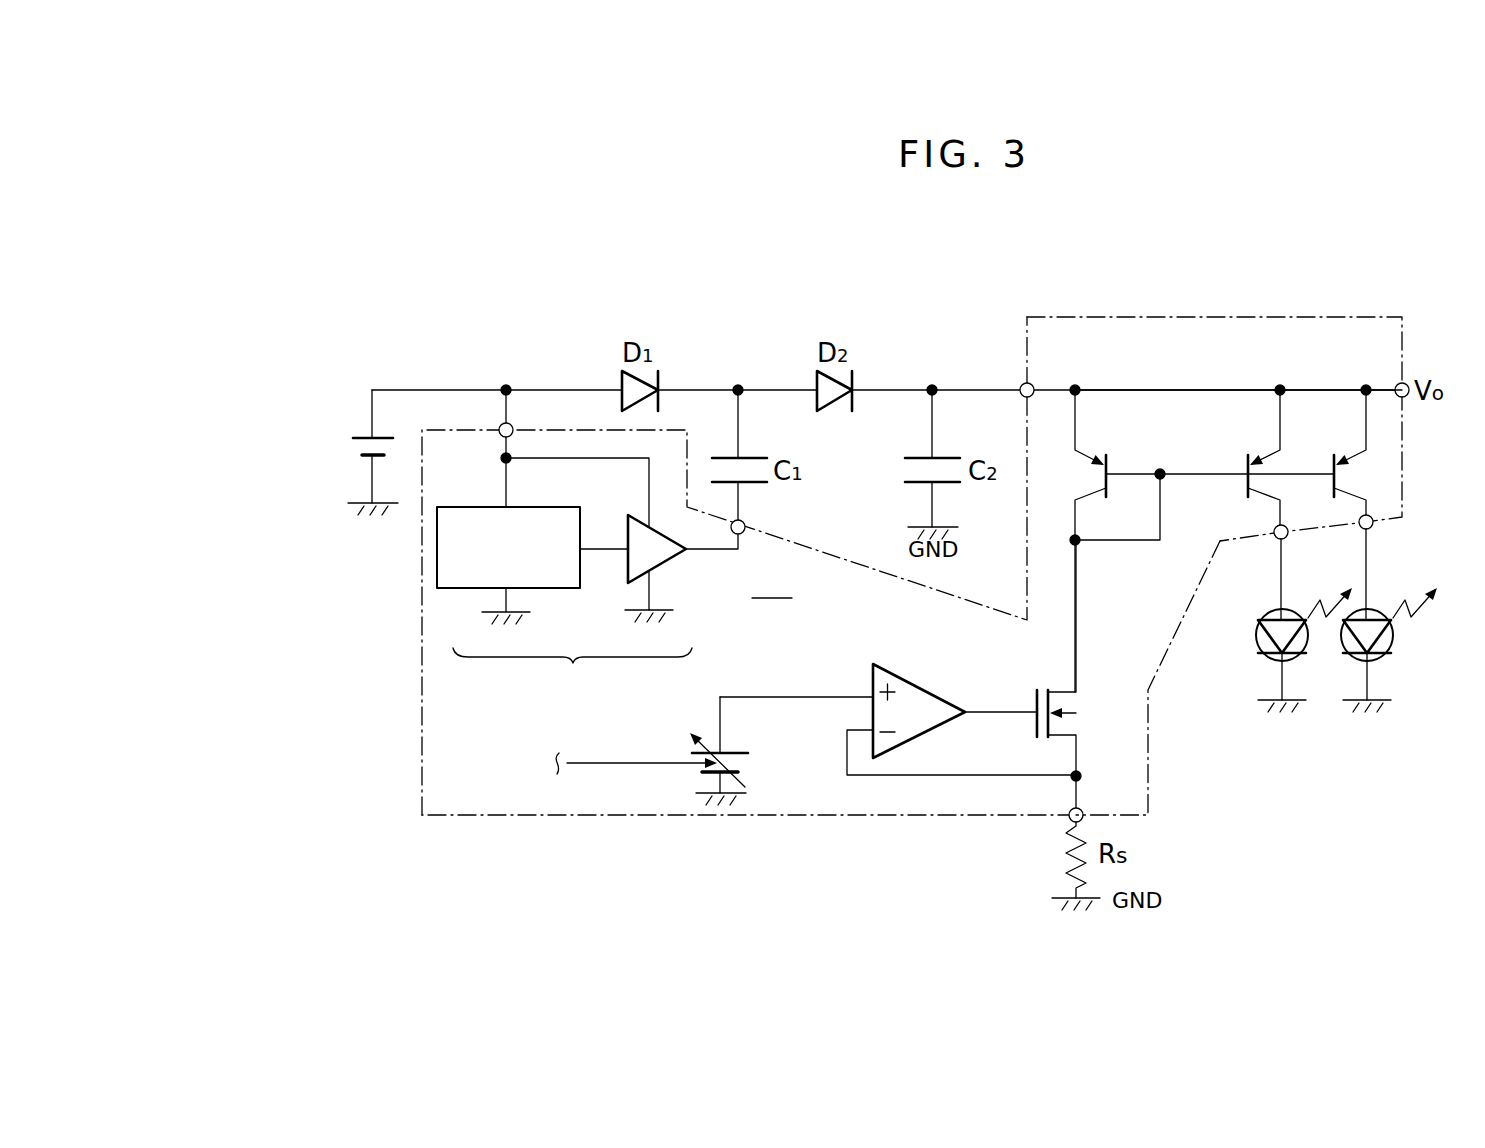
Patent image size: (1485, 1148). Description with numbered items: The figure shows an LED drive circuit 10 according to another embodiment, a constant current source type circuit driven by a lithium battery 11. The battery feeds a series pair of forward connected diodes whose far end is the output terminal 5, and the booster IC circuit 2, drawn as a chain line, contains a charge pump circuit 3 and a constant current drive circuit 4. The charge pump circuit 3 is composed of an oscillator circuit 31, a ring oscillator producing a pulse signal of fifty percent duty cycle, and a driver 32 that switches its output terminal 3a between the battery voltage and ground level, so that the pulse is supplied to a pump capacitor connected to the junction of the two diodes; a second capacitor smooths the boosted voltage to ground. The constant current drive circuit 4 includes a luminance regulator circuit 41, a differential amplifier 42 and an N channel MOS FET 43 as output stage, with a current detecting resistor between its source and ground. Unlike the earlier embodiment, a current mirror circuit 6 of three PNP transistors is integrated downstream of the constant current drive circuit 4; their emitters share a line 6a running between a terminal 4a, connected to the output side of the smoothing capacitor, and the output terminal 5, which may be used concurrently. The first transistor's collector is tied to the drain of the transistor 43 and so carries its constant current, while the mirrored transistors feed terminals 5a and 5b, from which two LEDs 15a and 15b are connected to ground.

The LED drive circuit 10 is at (833, 263).
The lithium battery 11 is at (352, 443).
The booster IC circuit 2 is at (1158, 689).
The charge pump circuit 3 is at (724, 566).
The output terminal of the charge pump circuit 3a is at (745, 524).
The oscillator circuit 31 is at (464, 504).
The driver 32 is at (626, 517).
The constant current drive circuit 4 is at (774, 725).
The terminal of the IC 4a is at (1019, 386).
The luminance regulator circuit 41 is at (735, 752).
The differential amplifier 42 is at (910, 681).
The N channel MOS FET 43 is at (1068, 692).
The output terminal 5 is at (1408, 385).
The terminal of the IC 5a is at (1277, 540).
The terminal of the IC 5b is at (1374, 529).
The current mirror circuit 6 is at (1209, 461).
The line 6a is at (1145, 388).
The LED 15a is at (1260, 650).
The LED 15b is at (1395, 638).